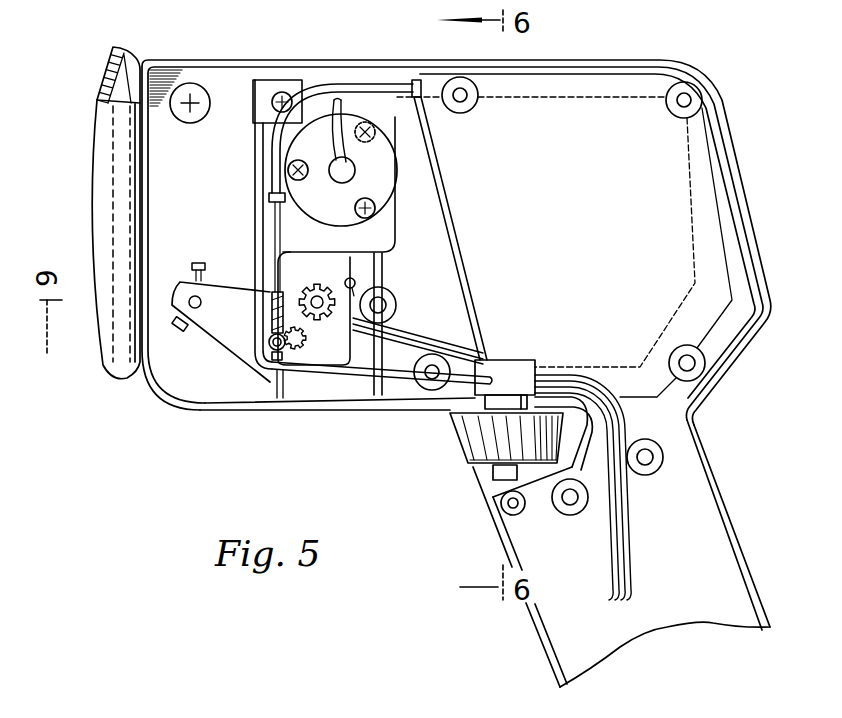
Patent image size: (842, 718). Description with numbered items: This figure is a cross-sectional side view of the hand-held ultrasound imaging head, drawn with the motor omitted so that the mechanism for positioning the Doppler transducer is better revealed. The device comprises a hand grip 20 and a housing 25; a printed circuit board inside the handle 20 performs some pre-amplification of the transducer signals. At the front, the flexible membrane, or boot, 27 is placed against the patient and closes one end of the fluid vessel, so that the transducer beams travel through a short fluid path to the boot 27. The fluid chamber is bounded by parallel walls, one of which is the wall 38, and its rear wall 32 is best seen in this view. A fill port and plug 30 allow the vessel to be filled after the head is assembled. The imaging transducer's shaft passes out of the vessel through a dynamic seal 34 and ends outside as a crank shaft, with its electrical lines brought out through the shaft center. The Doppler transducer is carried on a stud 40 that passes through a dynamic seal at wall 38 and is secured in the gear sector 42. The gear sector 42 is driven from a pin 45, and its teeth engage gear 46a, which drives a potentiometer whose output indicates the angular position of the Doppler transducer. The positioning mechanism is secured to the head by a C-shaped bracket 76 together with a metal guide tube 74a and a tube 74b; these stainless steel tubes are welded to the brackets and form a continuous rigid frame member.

The hand grip 20 is at (737, 513).
The housing 25 is at (600, 60).
The flexible membrane, or boot 27 is at (97, 100).
The fill port and plug 30 is at (190, 83).
The rear wall 32 is at (387, 242).
The dynamic seal 34 is at (352, 178).
The wall 38 is at (195, 118).
The stud 40 is at (180, 296).
The gear sector 42 is at (233, 337).
The pin 45 is at (300, 346).
The gear 46a is at (318, 284).
The metal guide tube 74a is at (452, 204).
The tube 74b is at (362, 381).
The C-shaped bracket 76 is at (256, 224).